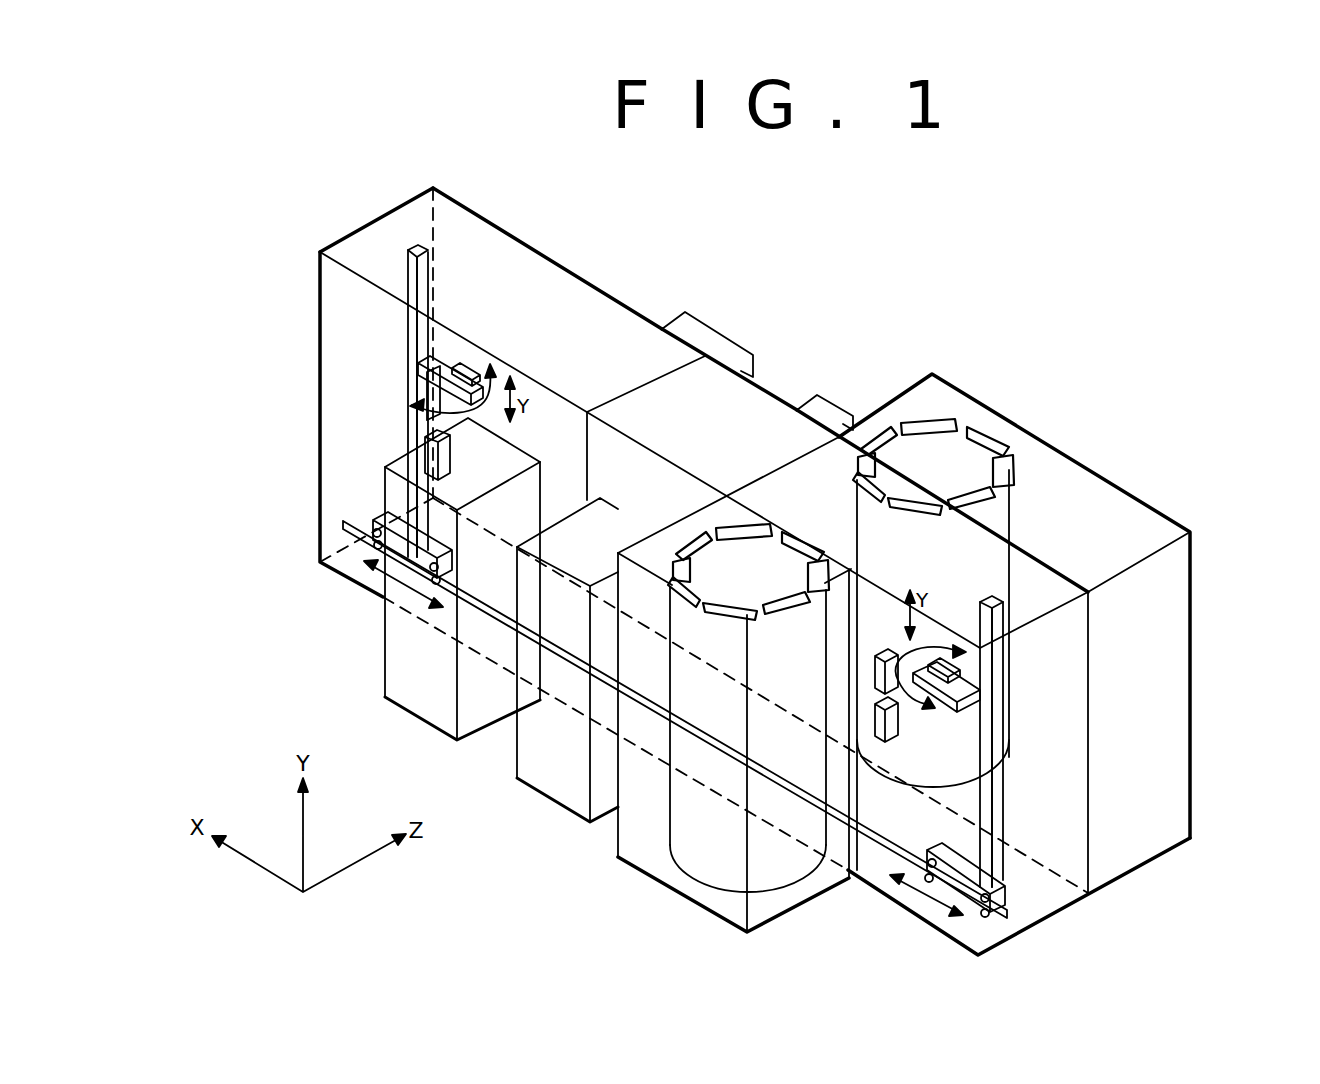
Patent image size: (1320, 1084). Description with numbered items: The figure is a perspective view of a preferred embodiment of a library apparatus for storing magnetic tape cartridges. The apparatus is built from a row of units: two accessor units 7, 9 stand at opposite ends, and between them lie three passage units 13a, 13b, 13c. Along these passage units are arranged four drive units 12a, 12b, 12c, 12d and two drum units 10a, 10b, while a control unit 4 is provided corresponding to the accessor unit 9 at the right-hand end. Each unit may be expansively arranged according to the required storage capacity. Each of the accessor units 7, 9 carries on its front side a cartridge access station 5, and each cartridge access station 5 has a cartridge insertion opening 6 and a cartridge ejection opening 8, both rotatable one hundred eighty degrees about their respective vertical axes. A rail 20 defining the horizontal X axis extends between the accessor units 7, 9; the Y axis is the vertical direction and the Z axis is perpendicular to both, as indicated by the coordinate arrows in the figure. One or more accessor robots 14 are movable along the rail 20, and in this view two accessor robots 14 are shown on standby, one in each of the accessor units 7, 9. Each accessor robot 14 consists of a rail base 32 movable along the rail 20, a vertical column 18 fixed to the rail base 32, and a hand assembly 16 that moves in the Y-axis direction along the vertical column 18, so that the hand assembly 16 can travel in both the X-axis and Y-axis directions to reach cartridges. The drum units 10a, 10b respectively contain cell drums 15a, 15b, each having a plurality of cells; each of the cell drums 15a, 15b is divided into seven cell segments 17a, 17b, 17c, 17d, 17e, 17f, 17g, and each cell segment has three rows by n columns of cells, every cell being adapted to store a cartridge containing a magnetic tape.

The control unit 4 is at (1170, 703).
The cartridge access station 5 is at (405, 420).
The cartridge insertion opening 6 is at (426, 388).
The accessor unit 7 is at (760, 388).
The cartridge ejection opening 8 is at (428, 452).
The accessor unit 9 is at (1063, 908).
The drum unit 10a is at (618, 856).
The drum unit 10b is at (1012, 408).
The drive unit 12a is at (520, 452).
The drive unit 12b is at (600, 500).
The drive unit 12c is at (808, 402).
The drive unit 12d is at (700, 318).
The passage unit 13a is at (620, 300).
The passage unit 13b is at (760, 392).
The passage unit 13c is at (847, 450).
The accessor robot 14 is at (405, 337).
The cell drum 15a is at (732, 529).
The cell drum 15b is at (912, 414).
The hand assembly 16 is at (454, 366).
The cell segment 17a is at (672, 582).
The cell segment 17b is at (686, 548).
The cell segment 17c is at (727, 528).
The cell segment 17d is at (786, 533).
The cell segment 17e is at (828, 562).
The cell segment 17f is at (775, 606).
The cell segment 17g is at (722, 610).
The vertical column 18 is at (424, 254).
The rail 20 is at (887, 850).
The rail base 32 is at (372, 537).